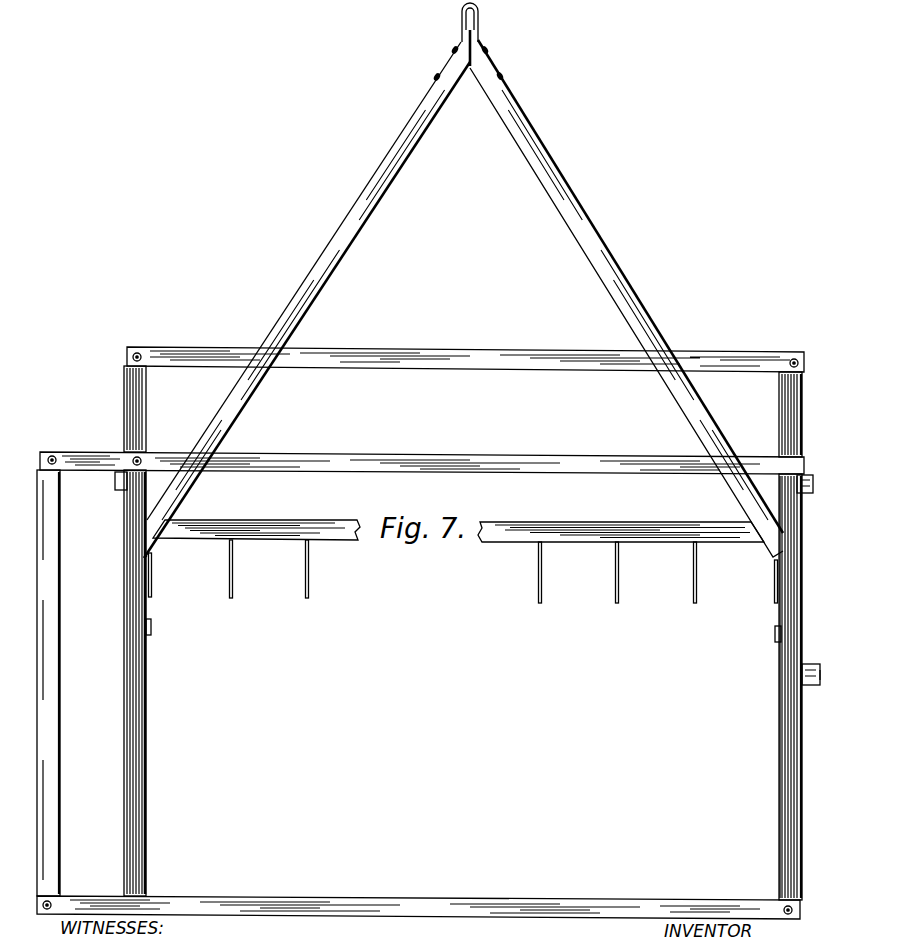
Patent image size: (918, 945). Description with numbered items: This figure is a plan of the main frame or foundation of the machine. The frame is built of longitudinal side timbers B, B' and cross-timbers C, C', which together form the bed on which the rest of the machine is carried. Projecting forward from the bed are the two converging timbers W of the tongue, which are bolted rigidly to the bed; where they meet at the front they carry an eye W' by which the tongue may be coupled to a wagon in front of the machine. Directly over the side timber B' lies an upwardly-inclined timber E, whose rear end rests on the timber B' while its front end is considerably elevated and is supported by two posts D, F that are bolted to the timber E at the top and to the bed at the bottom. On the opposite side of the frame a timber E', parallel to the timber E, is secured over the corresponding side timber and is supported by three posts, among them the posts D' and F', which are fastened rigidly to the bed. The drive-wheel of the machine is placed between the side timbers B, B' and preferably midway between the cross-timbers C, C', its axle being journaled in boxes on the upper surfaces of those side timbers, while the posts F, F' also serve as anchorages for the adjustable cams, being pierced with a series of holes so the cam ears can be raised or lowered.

The converging timber W is at (463, 299).
The eye W' is at (451, 34).
The side timber B is at (70, 683).
The side timber B' is at (150, 631).
The cross-timber C is at (418, 907).
The cross-timber C' is at (422, 449).
The post D is at (112, 488).
The post D' is at (812, 502).
The upwardly-inclined timber E is at (160, 683).
The timber E' is at (762, 687).
The post F is at (160, 634).
The post F' is at (759, 629).
The pin e is at (308, 572).